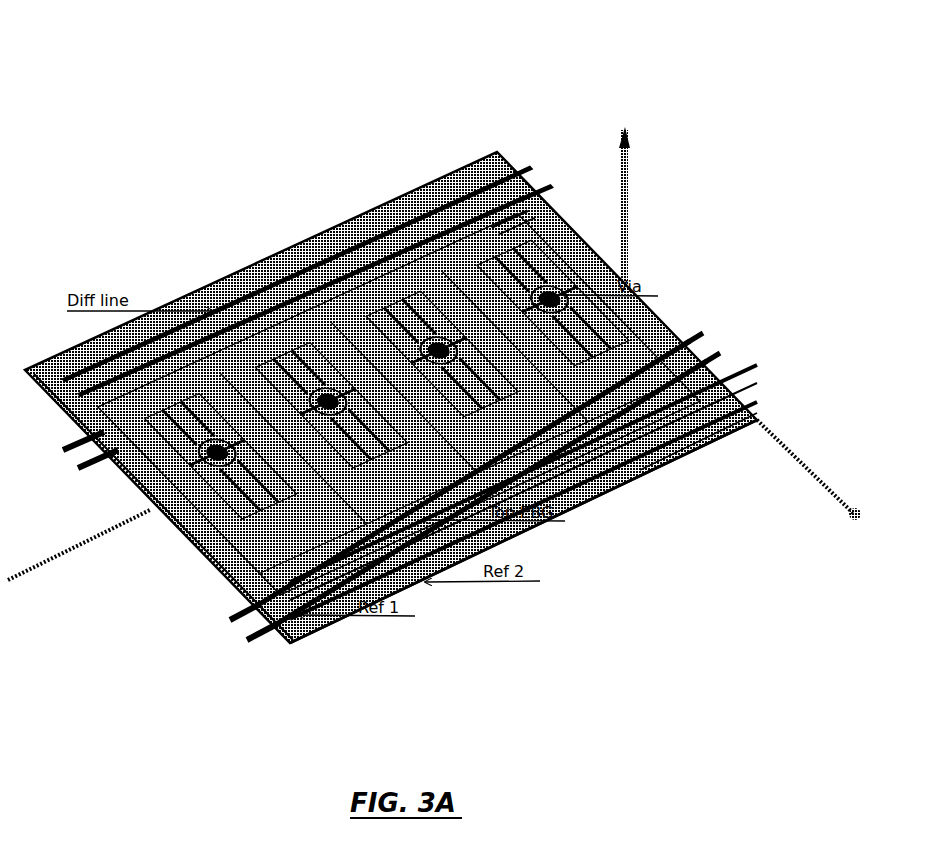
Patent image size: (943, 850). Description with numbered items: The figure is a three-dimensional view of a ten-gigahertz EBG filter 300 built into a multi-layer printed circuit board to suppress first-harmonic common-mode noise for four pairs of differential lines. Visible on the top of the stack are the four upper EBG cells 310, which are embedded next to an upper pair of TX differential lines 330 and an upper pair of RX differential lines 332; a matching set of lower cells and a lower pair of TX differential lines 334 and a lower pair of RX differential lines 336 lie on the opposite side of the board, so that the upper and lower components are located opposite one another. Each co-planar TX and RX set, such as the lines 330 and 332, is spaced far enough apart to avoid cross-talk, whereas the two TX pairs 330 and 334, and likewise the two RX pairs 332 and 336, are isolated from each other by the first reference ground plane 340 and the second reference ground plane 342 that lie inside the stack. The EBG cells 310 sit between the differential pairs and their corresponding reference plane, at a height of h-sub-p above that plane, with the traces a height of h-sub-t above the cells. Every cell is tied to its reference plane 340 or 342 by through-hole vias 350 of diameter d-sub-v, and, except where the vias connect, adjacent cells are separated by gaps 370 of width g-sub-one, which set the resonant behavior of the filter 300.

The 10-GHz EBG filter 300 is at (122, 97).
The upper EBG cells 310 is at (255, 272).
The upper pair of differential lines (TX) 330 is at (578, 158).
The upper pair of differential lines (RX) 332 is at (737, 320).
The lower pair of differential lines (TX) 334 is at (44, 470).
The lower pair of differential lines (RX) 336 is at (214, 635).
The reference ground plane Ref 1 340 is at (523, 515).
The reference ground plane Ref 2 342 is at (523, 531).
The through-hole vias 350 is at (654, 478).
The gaps 370 is at (566, 240).